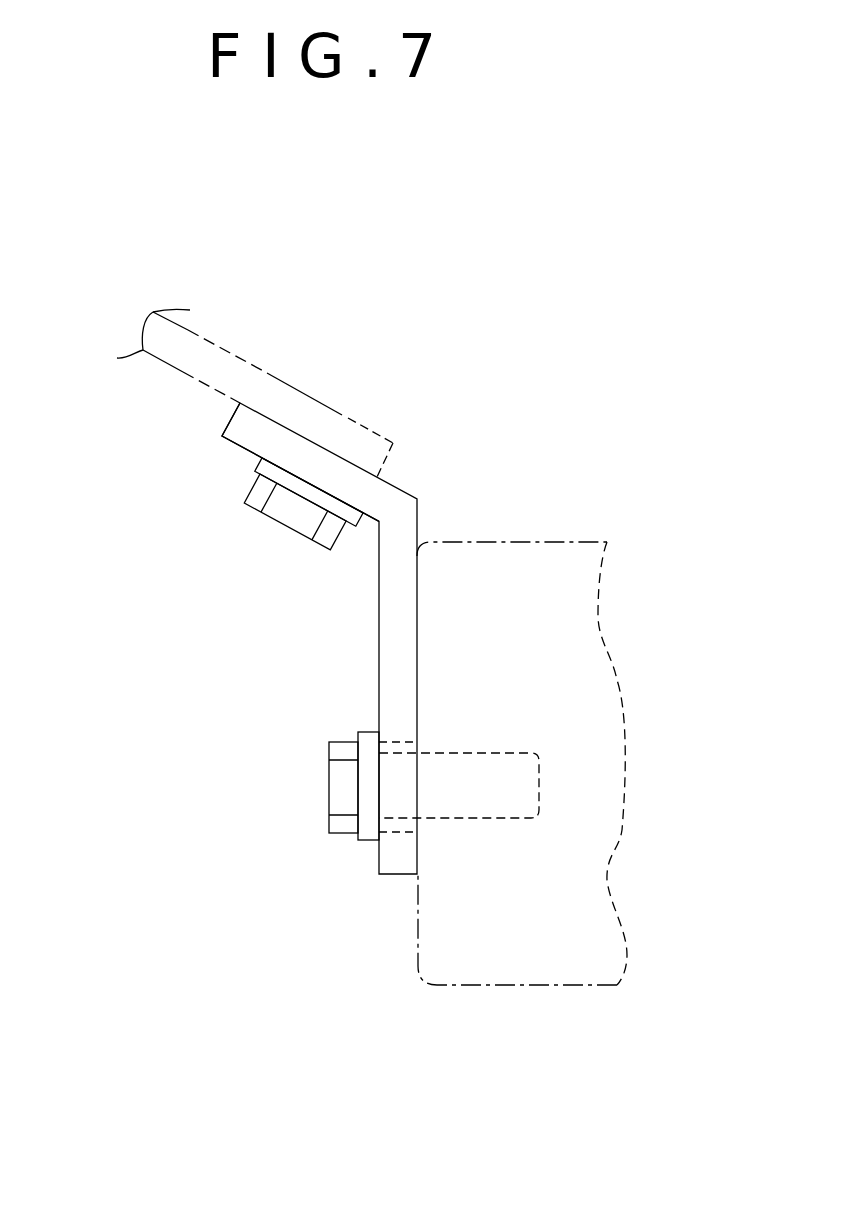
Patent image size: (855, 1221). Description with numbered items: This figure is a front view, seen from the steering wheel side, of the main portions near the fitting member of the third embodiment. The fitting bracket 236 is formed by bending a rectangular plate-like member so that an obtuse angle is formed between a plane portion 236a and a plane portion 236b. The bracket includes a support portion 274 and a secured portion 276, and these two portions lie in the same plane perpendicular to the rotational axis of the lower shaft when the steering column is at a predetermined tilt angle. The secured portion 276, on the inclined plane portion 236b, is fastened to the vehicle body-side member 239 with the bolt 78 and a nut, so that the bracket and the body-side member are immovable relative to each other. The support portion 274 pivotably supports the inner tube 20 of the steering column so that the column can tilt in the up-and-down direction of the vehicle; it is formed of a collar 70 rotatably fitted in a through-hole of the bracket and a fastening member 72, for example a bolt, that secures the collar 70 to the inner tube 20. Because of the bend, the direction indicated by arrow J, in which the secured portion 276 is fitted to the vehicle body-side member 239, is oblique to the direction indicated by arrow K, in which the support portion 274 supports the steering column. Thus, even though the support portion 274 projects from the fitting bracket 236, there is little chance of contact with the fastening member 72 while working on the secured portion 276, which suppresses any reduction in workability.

The inner tube 20 is at (540, 542).
The collar 70 is at (372, 840).
The fastening member 72 is at (330, 805).
The bolt 78 is at (256, 498).
The fitting bracket 236 is at (390, 486).
The plane portion 236a is at (398, 832).
The plane portion 236b is at (340, 457).
The vehicle body-side member 239 is at (266, 373).
The support portion 274 is at (330, 730).
The secured portion 276 is at (173, 522).
The arrow J is at (273, 545).
The arrow K is at (310, 790).